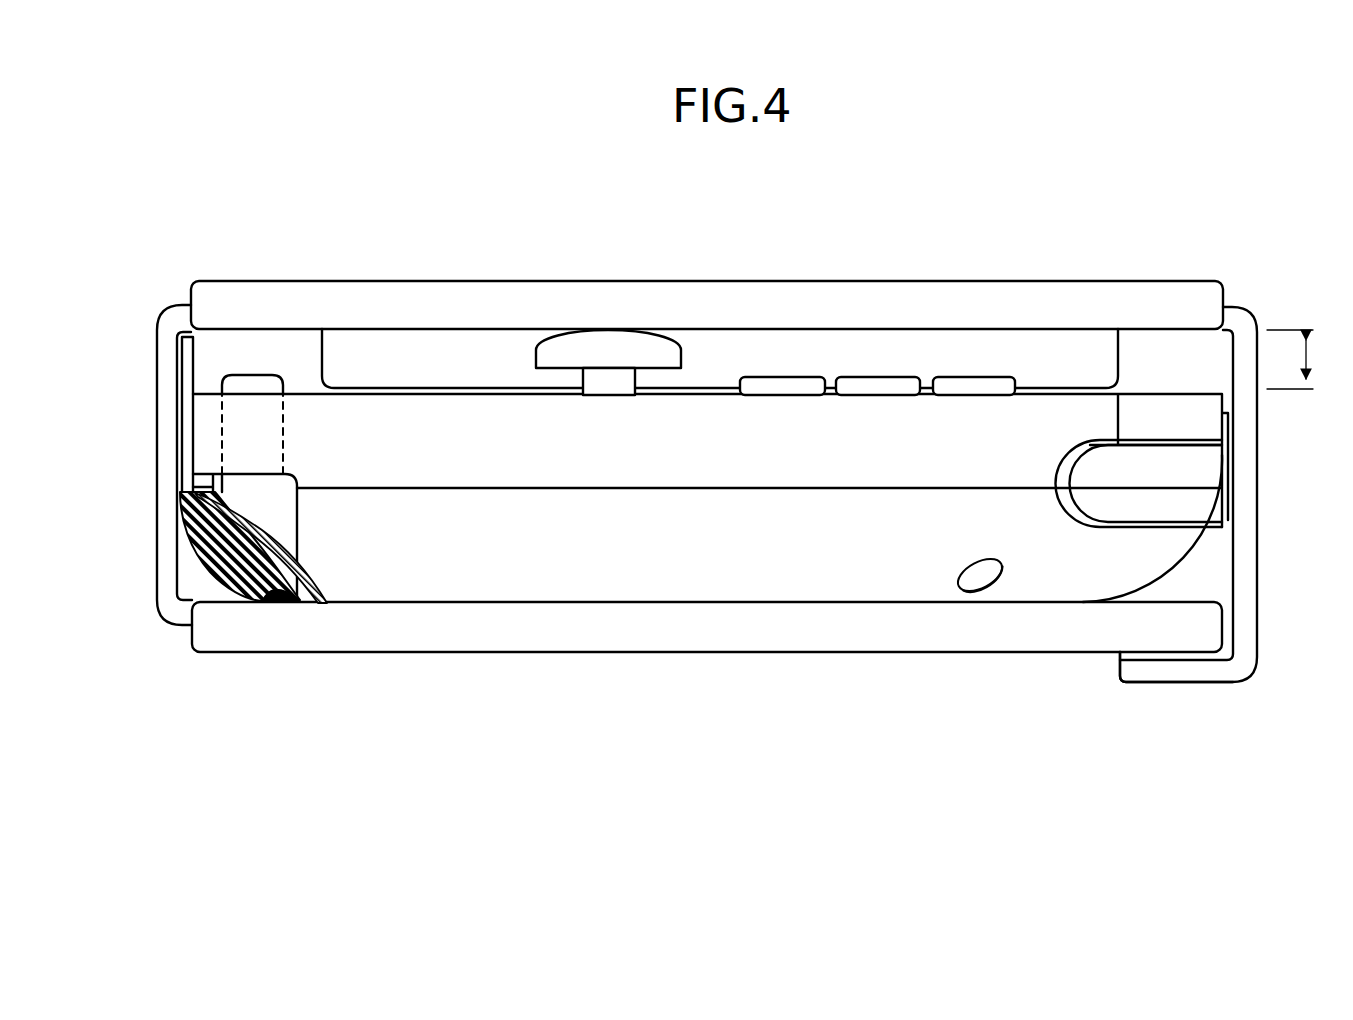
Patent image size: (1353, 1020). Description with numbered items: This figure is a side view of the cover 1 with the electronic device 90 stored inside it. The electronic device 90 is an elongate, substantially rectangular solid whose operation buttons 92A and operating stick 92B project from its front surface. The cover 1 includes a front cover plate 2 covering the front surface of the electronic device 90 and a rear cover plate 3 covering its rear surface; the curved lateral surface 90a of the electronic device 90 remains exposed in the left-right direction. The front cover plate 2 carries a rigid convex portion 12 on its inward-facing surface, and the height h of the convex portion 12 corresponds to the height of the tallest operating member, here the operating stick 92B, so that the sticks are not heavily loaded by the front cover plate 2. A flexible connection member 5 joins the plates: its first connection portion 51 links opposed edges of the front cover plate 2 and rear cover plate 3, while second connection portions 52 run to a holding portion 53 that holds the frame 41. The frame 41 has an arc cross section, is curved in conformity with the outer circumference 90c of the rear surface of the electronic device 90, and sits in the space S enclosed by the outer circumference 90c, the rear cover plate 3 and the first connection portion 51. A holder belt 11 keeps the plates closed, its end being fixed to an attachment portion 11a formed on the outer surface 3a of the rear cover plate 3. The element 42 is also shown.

The cover 1 is at (1047, 248).
The front cover plate 2 is at (690, 285).
The rear cover plate 3 is at (788, 645).
The outer surface of the rear cover plate 3a is at (978, 653).
The connection member 5 is at (143, 385).
The holder belt 11 is at (1250, 514).
The attachment portion 11a is at (1170, 655).
The convex portion 12 is at (790, 340).
The frame 41 is at (250, 598).
The latch member 42 is at (250, 385).
The first connection portion 51 is at (165, 437).
The second connection portion 52 is at (188, 472).
The holding portion 53 is at (212, 572).
The electronic device 90 is at (445, 380).
The lateral surface 90a is at (667, 473).
The outer circumference of the rear surface 90c is at (1175, 575).
The operation buttons 92A is at (968, 383).
The operating stick 92B is at (600, 340).
The space S is at (220, 590).
The height of the convex portion h is at (1301, 359).